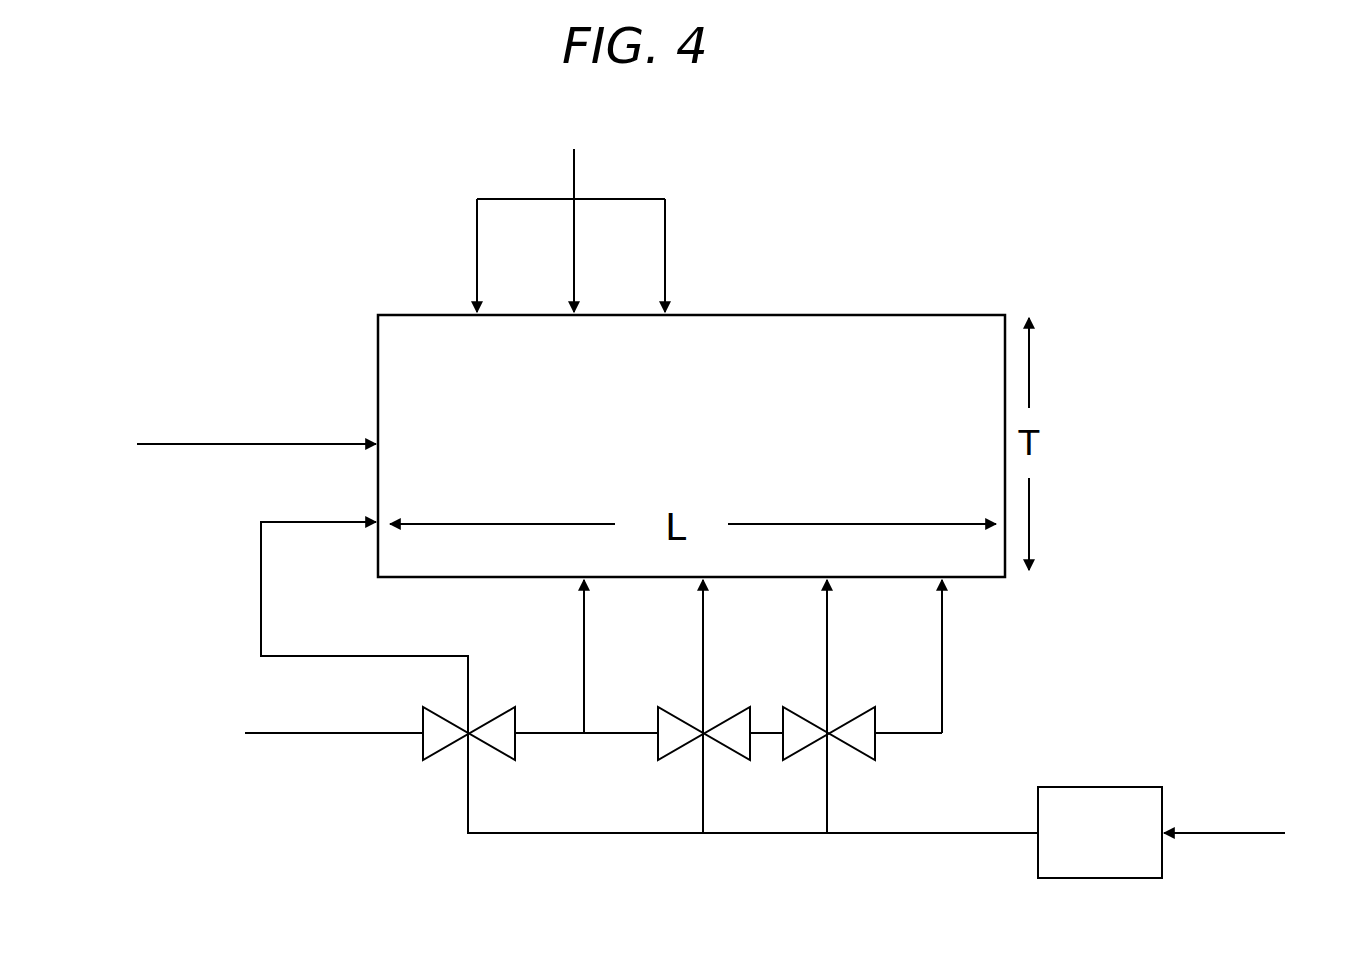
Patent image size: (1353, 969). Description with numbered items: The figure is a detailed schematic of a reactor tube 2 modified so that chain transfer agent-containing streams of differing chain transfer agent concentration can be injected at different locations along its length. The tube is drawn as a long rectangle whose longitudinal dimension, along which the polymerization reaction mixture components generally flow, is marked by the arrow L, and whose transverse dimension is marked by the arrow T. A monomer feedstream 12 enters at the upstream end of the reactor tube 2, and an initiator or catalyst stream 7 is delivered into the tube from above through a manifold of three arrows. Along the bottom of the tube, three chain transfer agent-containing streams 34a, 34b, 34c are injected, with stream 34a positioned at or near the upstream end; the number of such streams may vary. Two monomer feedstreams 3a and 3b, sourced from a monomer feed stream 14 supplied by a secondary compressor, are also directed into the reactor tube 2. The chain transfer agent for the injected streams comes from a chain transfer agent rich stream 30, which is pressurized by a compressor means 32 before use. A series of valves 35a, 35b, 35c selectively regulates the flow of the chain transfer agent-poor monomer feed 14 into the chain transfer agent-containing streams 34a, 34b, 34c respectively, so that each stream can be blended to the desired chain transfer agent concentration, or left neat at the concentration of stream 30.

The reactor tube 2 is at (771, 403).
The initiator or catalyst stream 7 is at (499, 198).
The monomer feedstream 12 is at (224, 446).
The monomer feed stream 14 is at (298, 733).
The chain transfer agent rich stream 30 is at (1257, 836).
The compressor means 32 is at (815, 805).
The chain transfer agent-containing stream 34a is at (364, 627).
The chain transfer agent-containing stream 34b is at (742, 706).
The chain transfer agent-containing stream 34c is at (868, 706).
The valve 35a is at (463, 719).
The valve 35b is at (703, 719).
The valve 35c is at (829, 719).
The monomer feedstream 3a is at (612, 656).
The monomer feedstream 3b is at (969, 656).